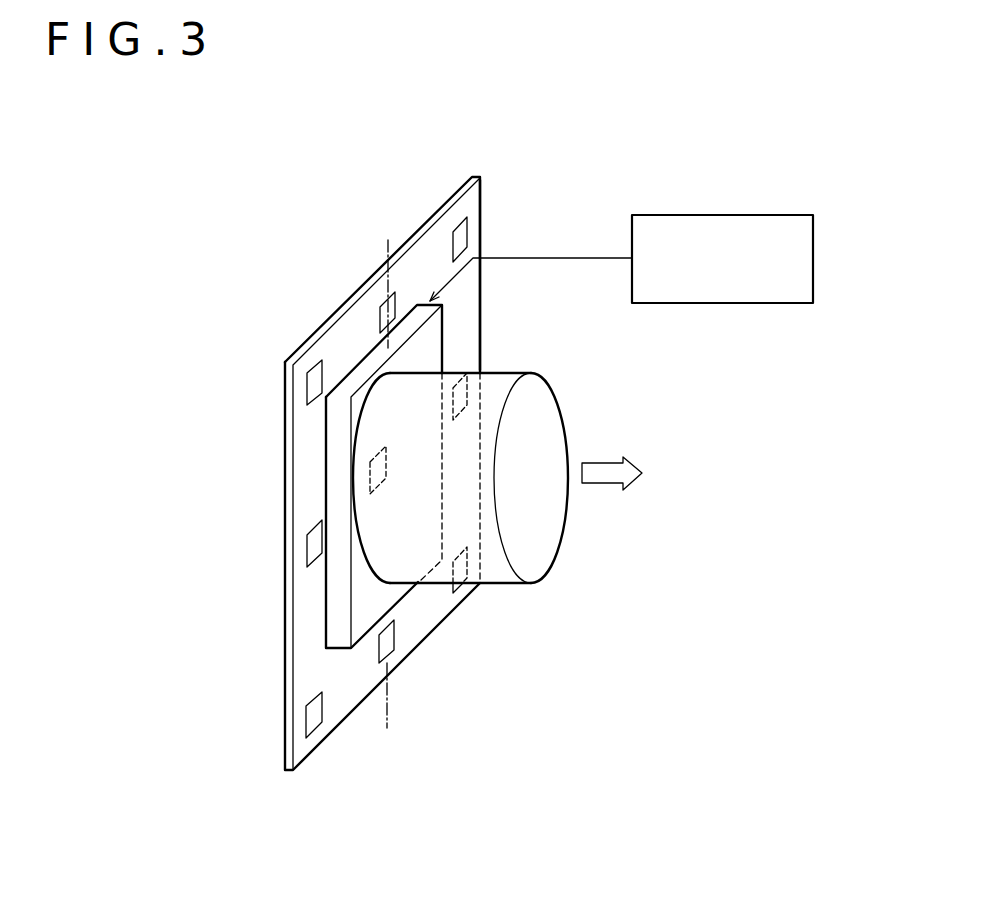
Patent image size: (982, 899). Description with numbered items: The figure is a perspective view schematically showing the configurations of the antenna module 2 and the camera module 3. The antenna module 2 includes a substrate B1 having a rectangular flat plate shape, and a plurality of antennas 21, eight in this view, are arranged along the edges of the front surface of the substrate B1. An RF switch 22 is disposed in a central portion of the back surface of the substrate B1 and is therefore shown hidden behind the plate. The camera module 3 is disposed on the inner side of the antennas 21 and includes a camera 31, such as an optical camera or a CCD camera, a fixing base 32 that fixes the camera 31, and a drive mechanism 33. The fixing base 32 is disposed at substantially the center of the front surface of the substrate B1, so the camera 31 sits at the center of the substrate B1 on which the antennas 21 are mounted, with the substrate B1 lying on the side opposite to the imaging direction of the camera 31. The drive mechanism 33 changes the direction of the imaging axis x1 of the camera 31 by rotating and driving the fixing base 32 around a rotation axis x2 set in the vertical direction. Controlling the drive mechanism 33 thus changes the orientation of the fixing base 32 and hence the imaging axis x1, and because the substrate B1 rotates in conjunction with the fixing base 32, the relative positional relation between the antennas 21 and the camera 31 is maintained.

The antenna module 2 is at (427, 228).
The camera module 3 is at (486, 489).
The antennas 21 is at (462, 240).
The RF switch 22 is at (371, 472).
The camera 31 is at (546, 388).
The fixing base 32 is at (437, 332).
The drive mechanism 33 is at (733, 213).
The substrate B1 is at (484, 195).
The imaging axis x1 is at (610, 463).
The rotation axis x2 is at (388, 253).